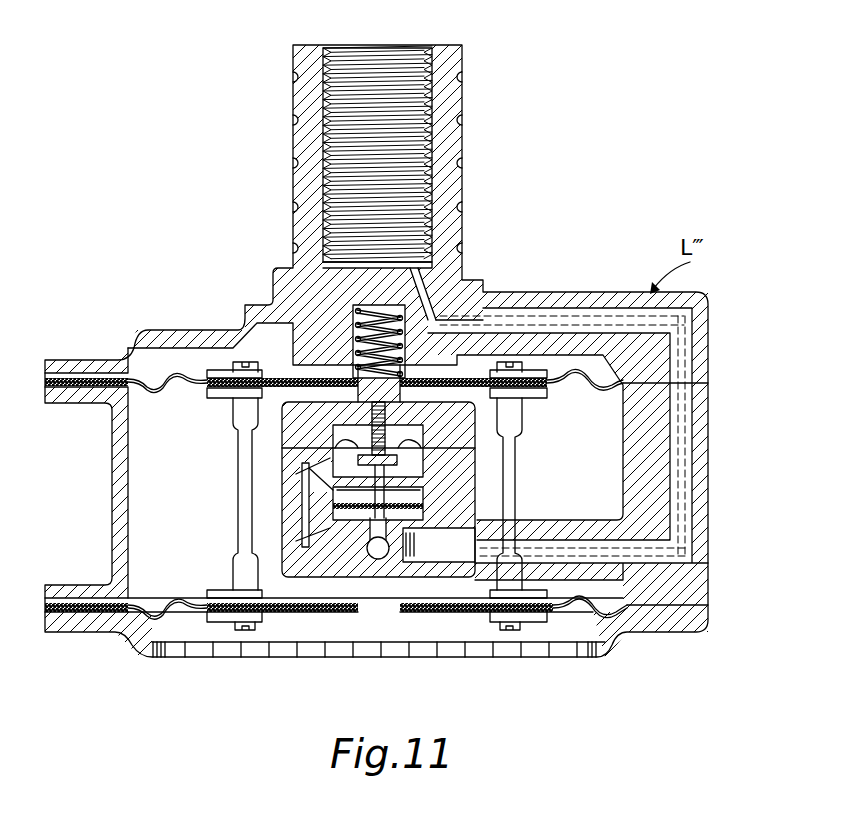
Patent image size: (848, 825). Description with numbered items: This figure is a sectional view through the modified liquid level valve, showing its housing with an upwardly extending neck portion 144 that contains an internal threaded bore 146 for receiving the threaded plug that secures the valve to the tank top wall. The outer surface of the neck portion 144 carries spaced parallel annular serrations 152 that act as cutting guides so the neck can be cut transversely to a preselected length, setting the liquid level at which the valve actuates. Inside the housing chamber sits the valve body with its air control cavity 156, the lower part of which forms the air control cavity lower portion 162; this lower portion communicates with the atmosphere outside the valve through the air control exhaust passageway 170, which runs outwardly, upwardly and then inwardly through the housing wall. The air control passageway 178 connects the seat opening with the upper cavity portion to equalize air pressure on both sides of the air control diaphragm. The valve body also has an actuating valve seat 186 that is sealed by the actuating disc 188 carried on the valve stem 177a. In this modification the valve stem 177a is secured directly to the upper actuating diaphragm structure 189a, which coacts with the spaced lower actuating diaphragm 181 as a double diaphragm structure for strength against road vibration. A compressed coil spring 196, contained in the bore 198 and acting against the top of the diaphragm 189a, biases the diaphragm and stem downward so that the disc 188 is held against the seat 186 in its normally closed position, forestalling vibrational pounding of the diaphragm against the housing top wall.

The neck portion 144 is at (462, 142).
The internal threaded bore 146 is at (340, 151).
The annular serrations 152 is at (292, 207).
The air control cavity 156 is at (302, 488).
The air control cavity lower portion 162 is at (357, 515).
The air control exhaust passageway 170 is at (552, 322).
The valve stem 177a is at (386, 412).
The air control passageway 178 is at (398, 528).
The actuating diaphragm 181 is at (437, 612).
The actuating valve seat 186 is at (405, 470).
The actuating disc 188 is at (397, 452).
The upper actuating diaphragm structure 189a is at (476, 383).
The compressed coil spring 196 is at (433, 298).
The bore 198 is at (353, 312).